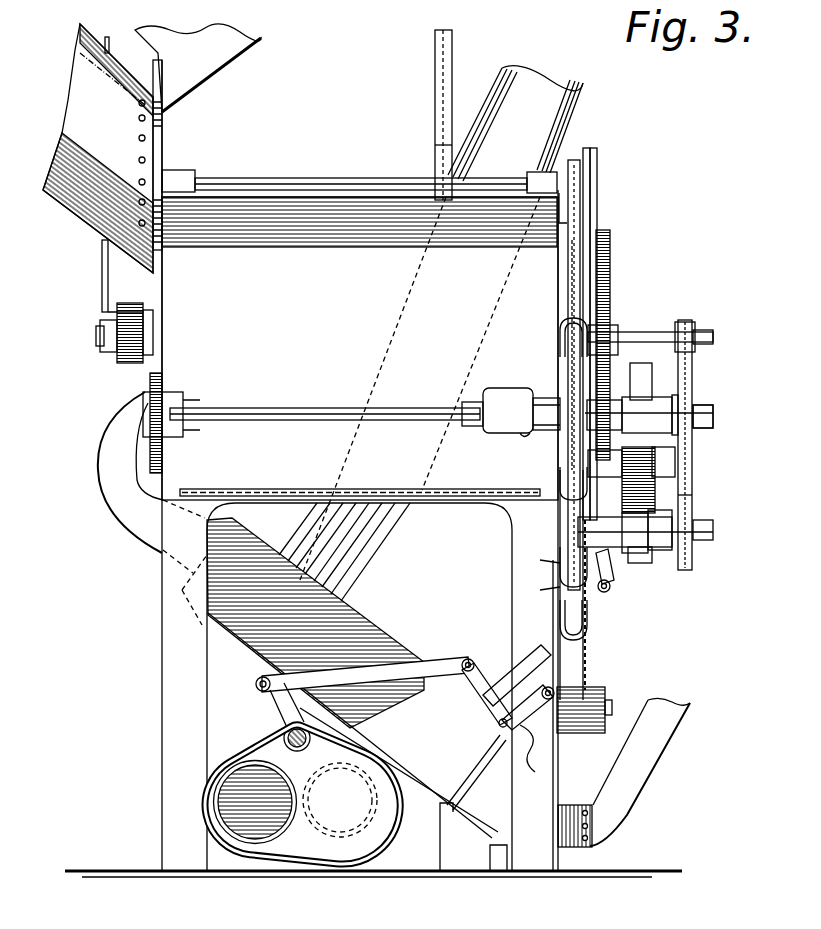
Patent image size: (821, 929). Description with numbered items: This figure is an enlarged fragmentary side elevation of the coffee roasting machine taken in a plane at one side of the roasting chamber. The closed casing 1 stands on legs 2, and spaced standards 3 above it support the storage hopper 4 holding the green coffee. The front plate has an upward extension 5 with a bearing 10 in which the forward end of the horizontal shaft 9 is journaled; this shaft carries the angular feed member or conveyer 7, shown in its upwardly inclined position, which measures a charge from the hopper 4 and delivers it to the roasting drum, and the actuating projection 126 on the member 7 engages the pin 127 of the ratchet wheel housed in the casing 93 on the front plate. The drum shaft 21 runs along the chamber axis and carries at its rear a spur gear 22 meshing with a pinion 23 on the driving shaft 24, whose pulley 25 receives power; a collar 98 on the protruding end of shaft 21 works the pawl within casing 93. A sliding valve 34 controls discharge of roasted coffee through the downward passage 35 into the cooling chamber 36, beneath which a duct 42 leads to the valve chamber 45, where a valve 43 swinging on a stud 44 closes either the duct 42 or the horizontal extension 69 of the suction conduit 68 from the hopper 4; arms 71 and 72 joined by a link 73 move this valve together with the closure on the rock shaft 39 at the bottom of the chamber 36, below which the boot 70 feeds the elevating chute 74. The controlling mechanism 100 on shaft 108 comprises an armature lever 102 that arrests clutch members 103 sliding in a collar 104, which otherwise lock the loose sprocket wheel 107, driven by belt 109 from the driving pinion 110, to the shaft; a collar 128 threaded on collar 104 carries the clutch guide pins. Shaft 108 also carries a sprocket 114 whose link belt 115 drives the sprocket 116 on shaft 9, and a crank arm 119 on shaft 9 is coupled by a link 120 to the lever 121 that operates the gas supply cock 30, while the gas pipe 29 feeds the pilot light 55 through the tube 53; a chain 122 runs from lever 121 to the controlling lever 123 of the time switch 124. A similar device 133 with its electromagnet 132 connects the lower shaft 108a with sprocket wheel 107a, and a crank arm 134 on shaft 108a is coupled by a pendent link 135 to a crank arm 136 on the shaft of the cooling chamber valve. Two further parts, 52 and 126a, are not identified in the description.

The casing 1 is at (360, 388).
The legs 2 is at (177, 648).
The standards 3 is at (438, 67).
The storage chamber or hopper 4 is at (208, 43).
The upward extension 5 is at (163, 137).
The angular feed member or conveyer 7 is at (98, 148).
The shaft 9 is at (300, 177).
The bearing 10 is at (190, 167).
The shaft 21 is at (100, 337).
The spur gear 22 is at (612, 250).
The pinion 23 is at (594, 509).
The driving shaft 24 is at (697, 463).
The pulley 25 is at (645, 365).
The pipe 29 is at (583, 625).
The gas supply cock or valve 30 is at (560, 563).
The valve 34 is at (143, 392).
The conduit or passage 35 is at (130, 503).
The cooling chamber 36 is at (372, 635).
The rock shaft 39 is at (495, 733).
The duct or passage 42 is at (363, 867).
The valve 43 is at (340, 800).
The stud or shaft 44 is at (330, 706).
The valve chamber 45 is at (395, 783).
The lever 52 is at (615, 597).
The tube 53 is at (560, 587).
The pilot light 55 is at (378, 489).
The conduit 68 is at (518, 95).
The horizontally extended lower part of conduit 69 is at (260, 833).
The boot or pocket 70 is at (502, 817).
The arm 71 is at (262, 700).
The arm 72 is at (483, 680).
The link 73 is at (433, 665).
The elevating chute or passage 74 is at (657, 740).
The casing 93 is at (133, 303).
The collar 98 is at (110, 360).
The controlling mechanism 100 is at (663, 407).
The armature lever 102 is at (640, 392).
The clutch members 103 is at (652, 380).
The collar 104 is at (713, 415).
The sprocket wheel 107 is at (693, 400).
The sprocket wheel 107a is at (697, 555).
The shaft 108 is at (407, 410).
The shaft 108a is at (713, 530).
The belt or band 109 is at (687, 480).
The driving pinion 110 is at (687, 320).
The sprocket wheel 114 is at (560, 437).
The link belt 115 is at (572, 267).
The sprocket wheel 116 is at (575, 157).
The crank arm 119 is at (593, 165).
The link 120 is at (597, 210).
The lever 121 is at (590, 552).
The chain or flexible connection 122 is at (590, 647).
The controlling lever 123 is at (587, 673).
The time switch or governor 124 is at (600, 722).
The actuating member or projection 126 is at (103, 263).
The pin 126a is at (108, 38).
The pin or projection 127 is at (103, 312).
The collar 128 is at (560, 380).
The electromagnet 132 is at (667, 560).
The mechanical device 133 is at (663, 513).
The crank arm 134 is at (560, 517).
The pendent link 135 is at (487, 697).
The crank arm 136 is at (515, 752).